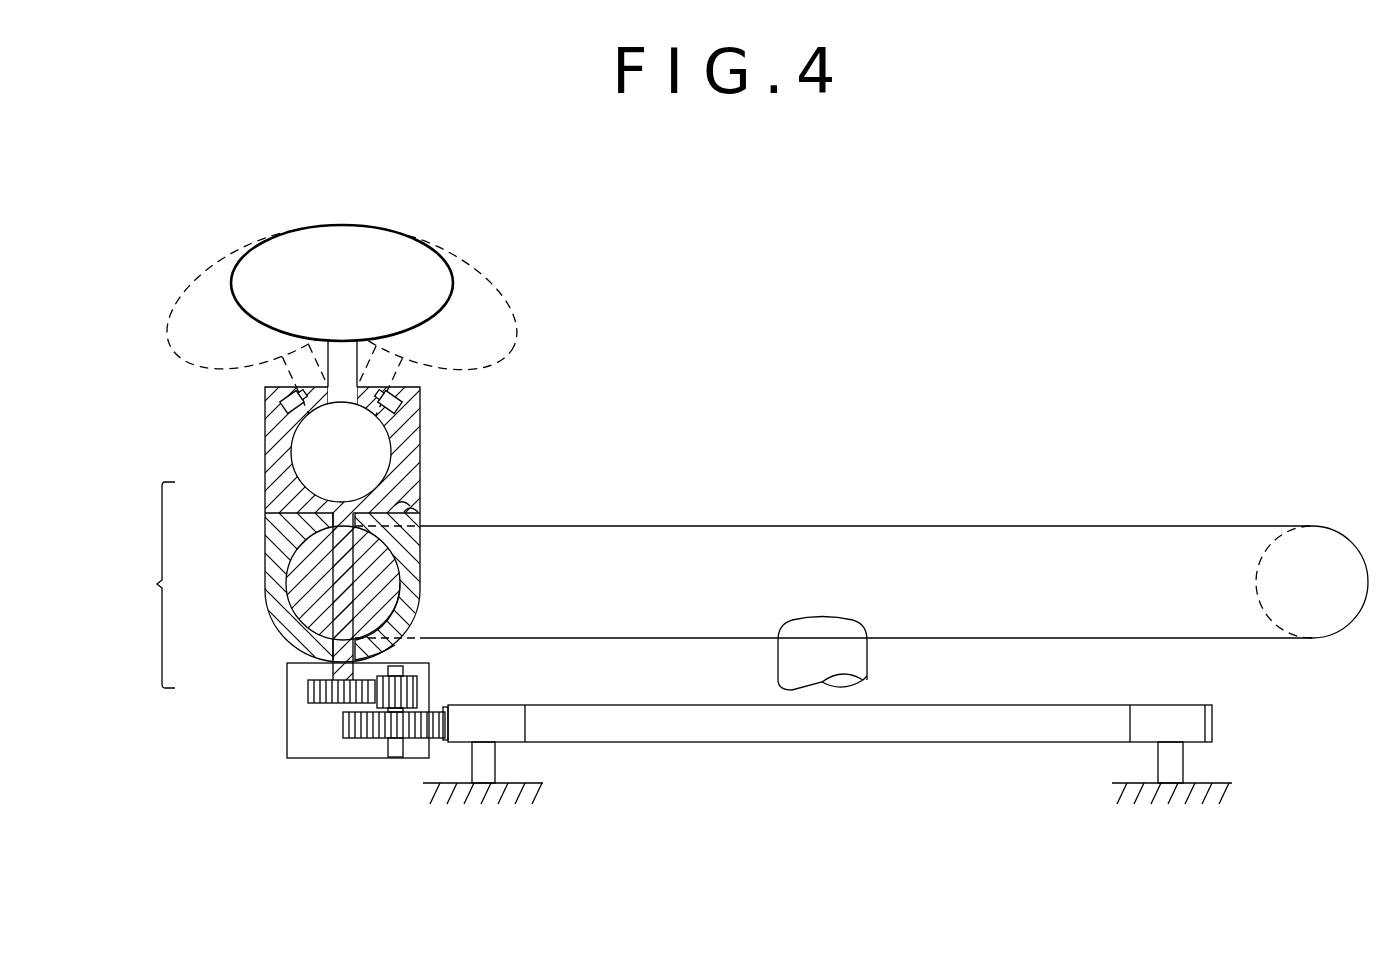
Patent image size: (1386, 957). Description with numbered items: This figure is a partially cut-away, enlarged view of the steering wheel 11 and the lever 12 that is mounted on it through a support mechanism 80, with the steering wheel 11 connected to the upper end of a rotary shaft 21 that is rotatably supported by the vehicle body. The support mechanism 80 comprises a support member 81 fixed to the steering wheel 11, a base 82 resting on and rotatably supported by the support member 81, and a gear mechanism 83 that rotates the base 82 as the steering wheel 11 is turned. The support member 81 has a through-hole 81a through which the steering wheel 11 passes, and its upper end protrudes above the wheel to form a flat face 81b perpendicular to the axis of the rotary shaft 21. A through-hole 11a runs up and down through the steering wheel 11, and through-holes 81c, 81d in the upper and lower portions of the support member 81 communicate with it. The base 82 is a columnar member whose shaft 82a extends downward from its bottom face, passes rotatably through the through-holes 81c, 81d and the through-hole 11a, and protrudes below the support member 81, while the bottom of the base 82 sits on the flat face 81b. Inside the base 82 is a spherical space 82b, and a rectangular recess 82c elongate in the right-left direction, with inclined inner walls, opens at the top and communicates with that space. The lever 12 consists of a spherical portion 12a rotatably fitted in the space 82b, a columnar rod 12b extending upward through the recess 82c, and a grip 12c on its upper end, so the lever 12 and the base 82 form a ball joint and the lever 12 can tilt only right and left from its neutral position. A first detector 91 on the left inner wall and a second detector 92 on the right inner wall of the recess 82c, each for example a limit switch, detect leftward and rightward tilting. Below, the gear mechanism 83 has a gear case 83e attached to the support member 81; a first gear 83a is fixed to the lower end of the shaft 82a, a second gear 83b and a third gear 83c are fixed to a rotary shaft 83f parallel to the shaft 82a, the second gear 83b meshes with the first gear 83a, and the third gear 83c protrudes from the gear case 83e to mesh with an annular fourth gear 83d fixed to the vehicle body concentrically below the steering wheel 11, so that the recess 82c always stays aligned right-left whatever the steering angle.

The lever 12 is at (272, 320).
The spherical portion 12a is at (330, 438).
The rod 12b is at (336, 367).
The grip (knob) 12c is at (306, 258).
The steering wheel 11 is at (1120, 528).
The through-hole 11a is at (385, 583).
The rotary shaft 21 is at (860, 660).
The support mechanism 80 is at (148, 585).
The support member 81 is at (347, 567).
The through-hole 81a is at (405, 620).
The flat face 81b is at (410, 512).
The through-hole 81c is at (395, 505).
The through-hole 81d is at (385, 648).
The base 82 is at (342, 452).
The shaft 82a is at (348, 548).
The spherical space 82b is at (392, 458).
The recess 82c is at (400, 360).
The gear mechanism 83 is at (705, 748).
The first gear 83a is at (320, 700).
The second gear 83b is at (417, 692).
The third gear 83c is at (360, 738).
The fourth gear 83d is at (678, 705).
The gear case 83e is at (430, 678).
The rotary shaft 83f is at (397, 758).
The first detector 91 is at (282, 402).
The second detector 92 is at (402, 402).